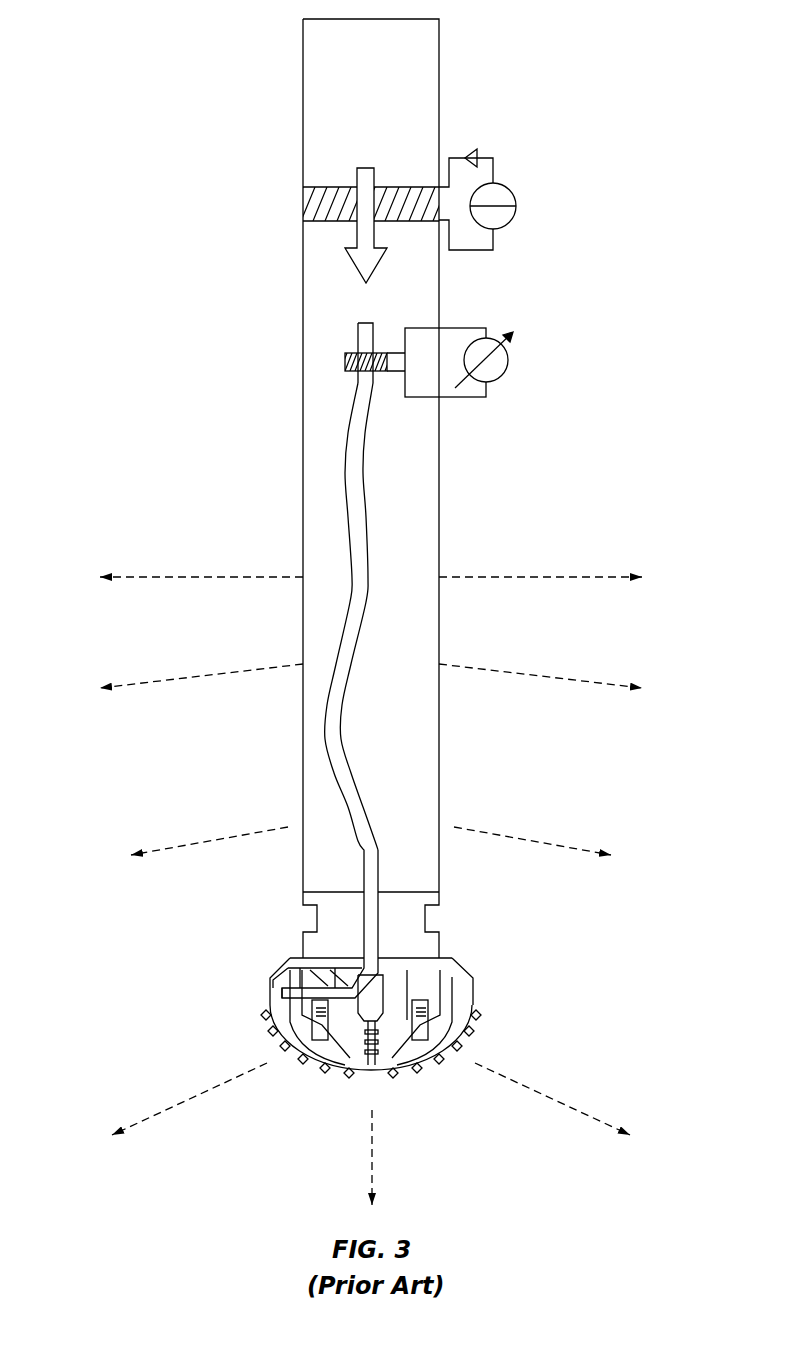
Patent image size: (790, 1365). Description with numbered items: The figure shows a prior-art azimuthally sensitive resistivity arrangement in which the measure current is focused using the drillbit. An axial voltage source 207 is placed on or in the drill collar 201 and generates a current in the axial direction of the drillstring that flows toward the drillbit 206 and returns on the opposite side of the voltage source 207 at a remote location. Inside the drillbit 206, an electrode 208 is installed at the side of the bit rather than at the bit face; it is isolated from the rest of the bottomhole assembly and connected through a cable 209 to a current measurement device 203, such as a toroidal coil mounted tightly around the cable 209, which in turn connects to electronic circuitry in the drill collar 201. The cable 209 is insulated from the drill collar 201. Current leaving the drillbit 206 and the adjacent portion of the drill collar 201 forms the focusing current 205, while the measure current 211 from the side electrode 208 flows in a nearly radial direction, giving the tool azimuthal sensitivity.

The drill collar 201 is at (303, 60).
The current measurement device 203 is at (500, 378).
The focusing current 205 is at (371, 885).
The drillbit 206 is at (465, 995).
The axial voltage source 207 is at (310, 207).
The electrode 208 is at (284, 970).
The cable 209 is at (363, 485).
The measure current 211 is at (282, 1000).